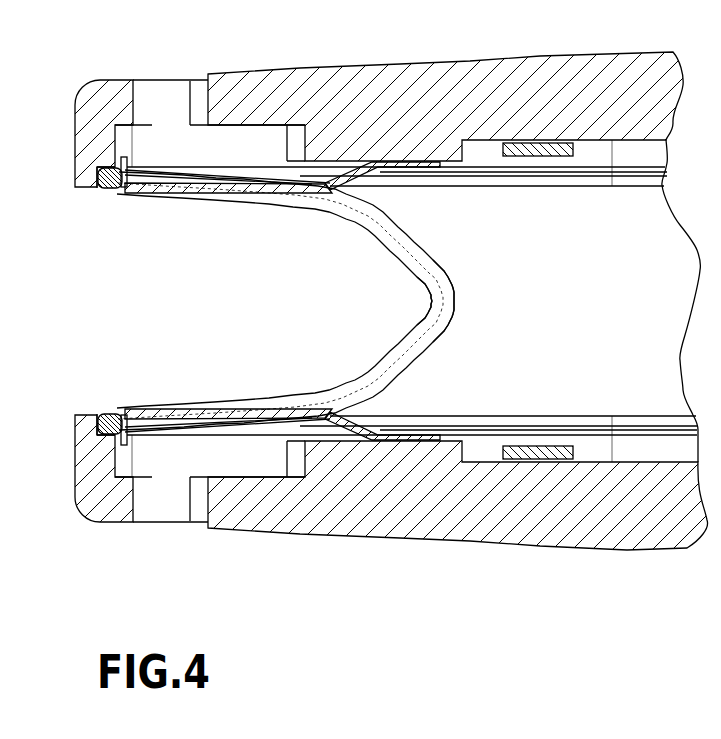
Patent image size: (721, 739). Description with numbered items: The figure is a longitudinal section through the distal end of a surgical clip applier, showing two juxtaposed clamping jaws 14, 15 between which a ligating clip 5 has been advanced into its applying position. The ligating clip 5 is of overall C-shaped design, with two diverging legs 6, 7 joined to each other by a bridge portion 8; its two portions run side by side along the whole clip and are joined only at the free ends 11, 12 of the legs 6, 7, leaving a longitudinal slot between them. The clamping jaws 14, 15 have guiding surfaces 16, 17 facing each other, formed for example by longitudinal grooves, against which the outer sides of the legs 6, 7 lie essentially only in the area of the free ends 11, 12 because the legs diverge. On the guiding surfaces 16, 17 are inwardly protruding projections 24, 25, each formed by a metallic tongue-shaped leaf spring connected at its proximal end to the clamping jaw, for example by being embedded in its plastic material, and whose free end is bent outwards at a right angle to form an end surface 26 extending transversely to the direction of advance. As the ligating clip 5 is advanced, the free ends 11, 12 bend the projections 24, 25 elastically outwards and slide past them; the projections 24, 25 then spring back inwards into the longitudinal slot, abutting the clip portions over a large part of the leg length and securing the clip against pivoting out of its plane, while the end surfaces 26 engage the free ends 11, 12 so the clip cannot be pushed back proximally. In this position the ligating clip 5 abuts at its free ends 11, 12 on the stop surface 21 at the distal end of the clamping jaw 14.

The ligating clip 5 is at (443, 262).
The leg 6 is at (187, 430).
The leg 7 is at (178, 172).
The bridge portion 8 is at (456, 322).
The free end 11 is at (123, 416).
The free end 12 is at (123, 188).
The clamping jaw 14 is at (97, 100).
The clamping jaw 15 is at (96, 492).
The guiding surface 16 is at (348, 170).
The guiding surface 17 is at (352, 437).
The stop surface 21 is at (98, 188).
The projection 24 is at (210, 190).
The projection 25 is at (203, 410).
The end surface 26 is at (97, 170).